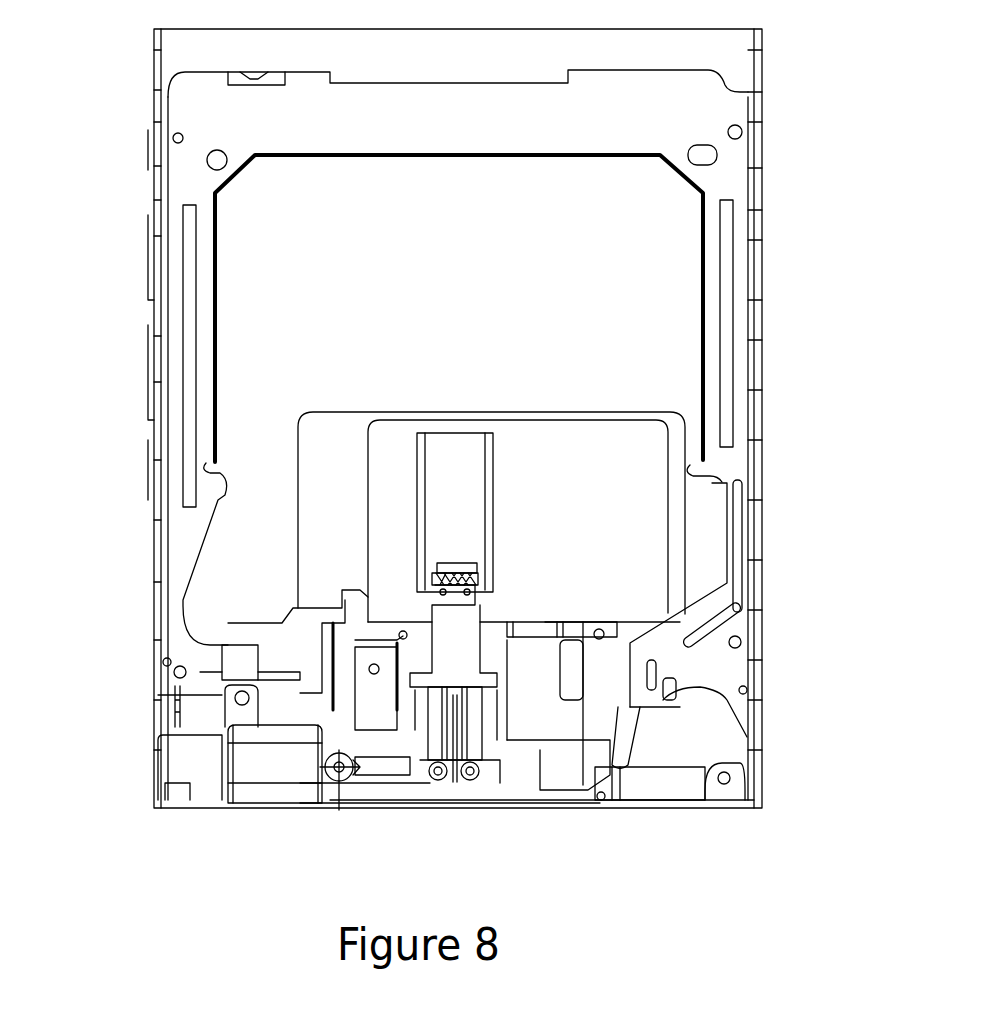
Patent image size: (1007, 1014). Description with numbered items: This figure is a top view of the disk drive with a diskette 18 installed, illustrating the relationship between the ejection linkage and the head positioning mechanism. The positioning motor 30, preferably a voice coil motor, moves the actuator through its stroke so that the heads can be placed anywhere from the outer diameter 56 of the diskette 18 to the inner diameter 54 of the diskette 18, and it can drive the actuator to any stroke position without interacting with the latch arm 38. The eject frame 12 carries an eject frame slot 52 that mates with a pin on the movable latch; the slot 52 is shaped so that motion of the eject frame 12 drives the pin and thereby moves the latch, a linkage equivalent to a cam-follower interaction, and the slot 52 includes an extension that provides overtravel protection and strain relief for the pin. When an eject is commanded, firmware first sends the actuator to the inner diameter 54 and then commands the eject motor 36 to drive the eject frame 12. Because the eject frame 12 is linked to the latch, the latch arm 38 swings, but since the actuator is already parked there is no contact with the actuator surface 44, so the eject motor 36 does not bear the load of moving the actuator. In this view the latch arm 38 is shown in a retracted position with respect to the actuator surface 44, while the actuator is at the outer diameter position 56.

The diskette 18 is at (225, 577).
The inner diameter 54 is at (460, 447).
The outer diameter 56 is at (480, 578).
The positioning motor 30 is at (522, 772).
The eject motor 36 is at (262, 772).
The actuator surface 44 is at (612, 757).
The eject frame 12 is at (733, 623).
The eject frame slot 52 is at (637, 707).
The latch arm 38 is at (637, 737).